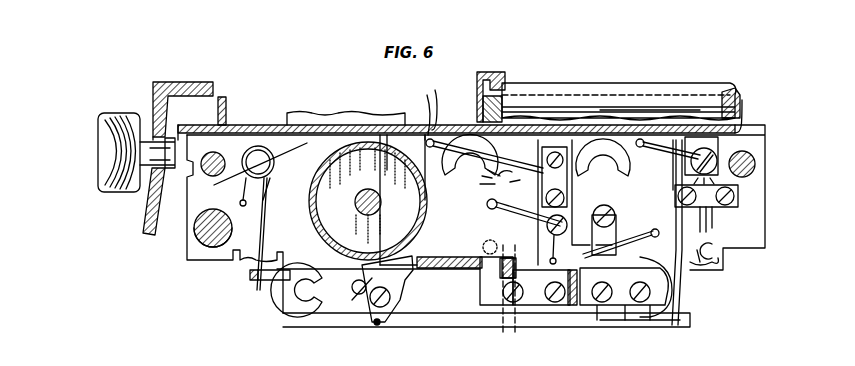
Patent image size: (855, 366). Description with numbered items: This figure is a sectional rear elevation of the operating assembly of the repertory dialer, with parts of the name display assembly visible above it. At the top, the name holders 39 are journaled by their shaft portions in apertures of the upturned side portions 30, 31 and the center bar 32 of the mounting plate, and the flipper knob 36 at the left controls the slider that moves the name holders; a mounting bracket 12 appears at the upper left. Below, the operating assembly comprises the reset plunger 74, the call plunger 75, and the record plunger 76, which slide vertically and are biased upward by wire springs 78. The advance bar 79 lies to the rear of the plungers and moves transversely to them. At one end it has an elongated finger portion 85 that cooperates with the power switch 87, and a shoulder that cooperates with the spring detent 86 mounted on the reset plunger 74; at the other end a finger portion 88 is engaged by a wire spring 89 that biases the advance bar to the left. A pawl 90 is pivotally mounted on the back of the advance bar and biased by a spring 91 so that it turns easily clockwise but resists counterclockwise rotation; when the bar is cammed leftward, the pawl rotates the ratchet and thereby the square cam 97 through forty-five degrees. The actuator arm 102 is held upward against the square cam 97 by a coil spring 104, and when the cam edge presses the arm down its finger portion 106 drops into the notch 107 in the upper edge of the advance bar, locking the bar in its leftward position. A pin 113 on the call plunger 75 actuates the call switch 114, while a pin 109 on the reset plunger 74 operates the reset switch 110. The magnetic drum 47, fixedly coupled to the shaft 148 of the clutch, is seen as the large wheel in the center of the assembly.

The mounting bracket 12 is at (203, 82).
The upturned side portion 31 is at (226, 110).
The flipper knob 36 is at (100, 148).
The record plunger 76 is at (362, 122).
The call plunger 75 is at (440, 128).
The pin 113 is at (430, 122).
The center bar 32 is at (488, 80).
The reset plunger 74 is at (622, 118).
The name holder 39 is at (683, 92).
The upturned side portion 30 is at (742, 110).
The wire spring 78 is at (300, 145).
The call switch 114 is at (530, 165).
The magnetic drum 47 is at (428, 201).
The shaft 148 is at (360, 210).
The actuator arm 102 is at (490, 212).
The square cam 97 is at (482, 244).
The coil spring 104 is at (512, 258).
The pin 109 is at (658, 230).
The spring detent 86 is at (615, 238).
The power switch 87 is at (714, 244).
The wire spring 89 is at (262, 236).
The finger portion 88 is at (250, 276).
The notch 107 is at (338, 283).
The finger portion 106 is at (352, 290).
The pawl 90 is at (410, 300).
The spring 91 is at (362, 305).
The advance bar 79 is at (466, 312).
The reset switch 110 is at (623, 290).
The elongated finger portion 85 is at (666, 318).